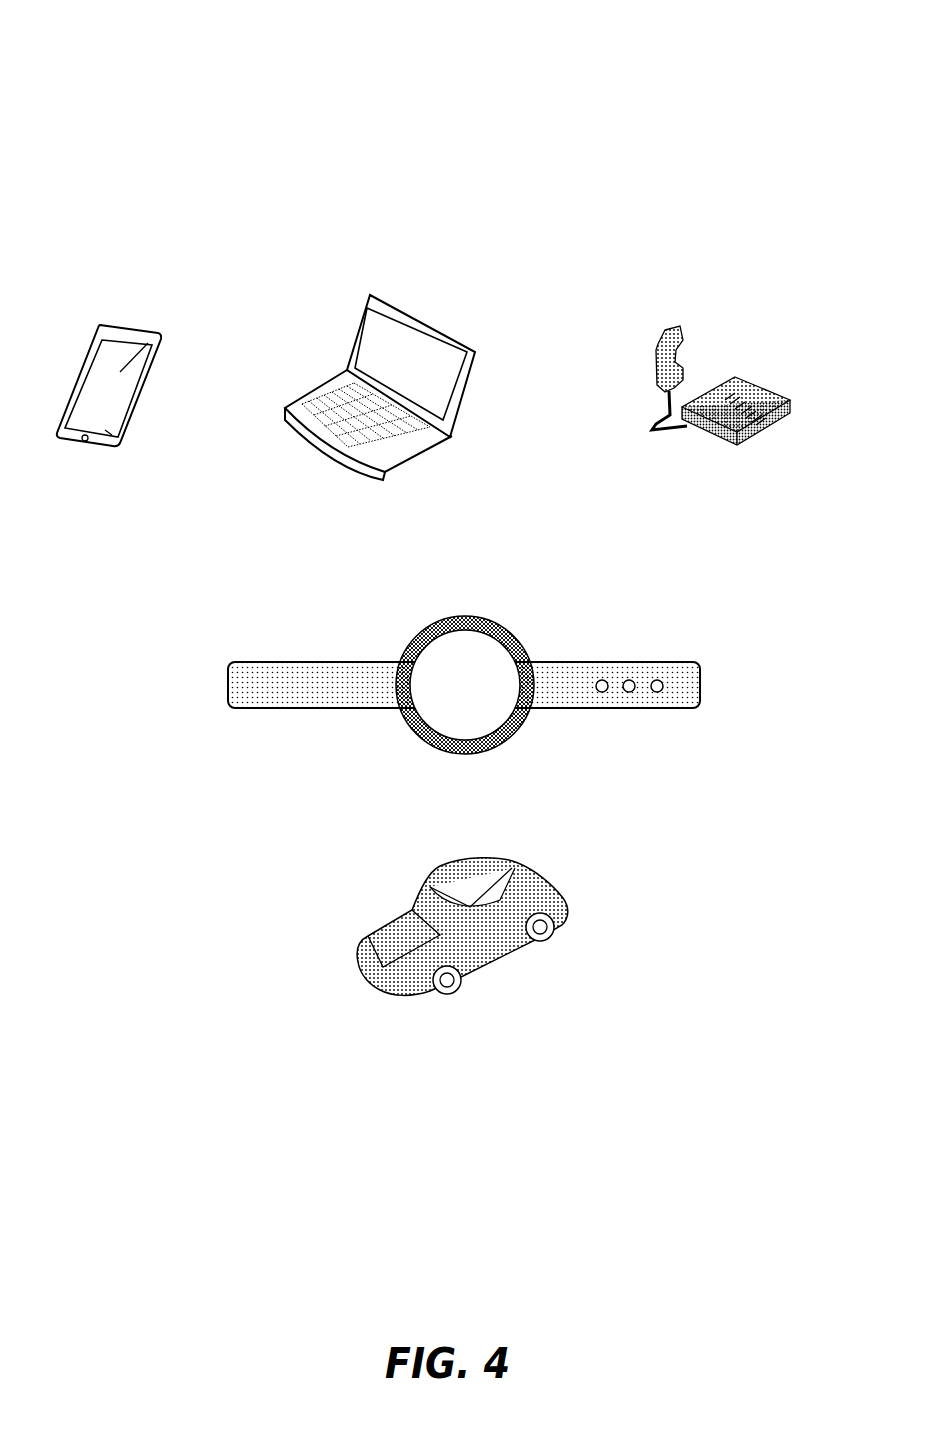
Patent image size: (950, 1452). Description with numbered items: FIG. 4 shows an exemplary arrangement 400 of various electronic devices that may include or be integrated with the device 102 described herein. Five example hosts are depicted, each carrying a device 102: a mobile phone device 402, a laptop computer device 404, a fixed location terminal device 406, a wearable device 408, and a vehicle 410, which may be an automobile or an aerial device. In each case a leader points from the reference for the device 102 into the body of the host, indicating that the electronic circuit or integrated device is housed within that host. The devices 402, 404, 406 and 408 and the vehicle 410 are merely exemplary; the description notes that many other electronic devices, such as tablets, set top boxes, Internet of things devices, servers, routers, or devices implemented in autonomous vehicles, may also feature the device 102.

The example environment of user devices 400 is at (128, 31).
The mobile phone device 402 is at (149, 333).
The laptop computer device 404 is at (430, 322).
The fixed location terminal device 406 is at (663, 346).
The wearable device 408 is at (582, 662).
The vehicle 410 is at (557, 877).
The device 102 is at (119, 446).